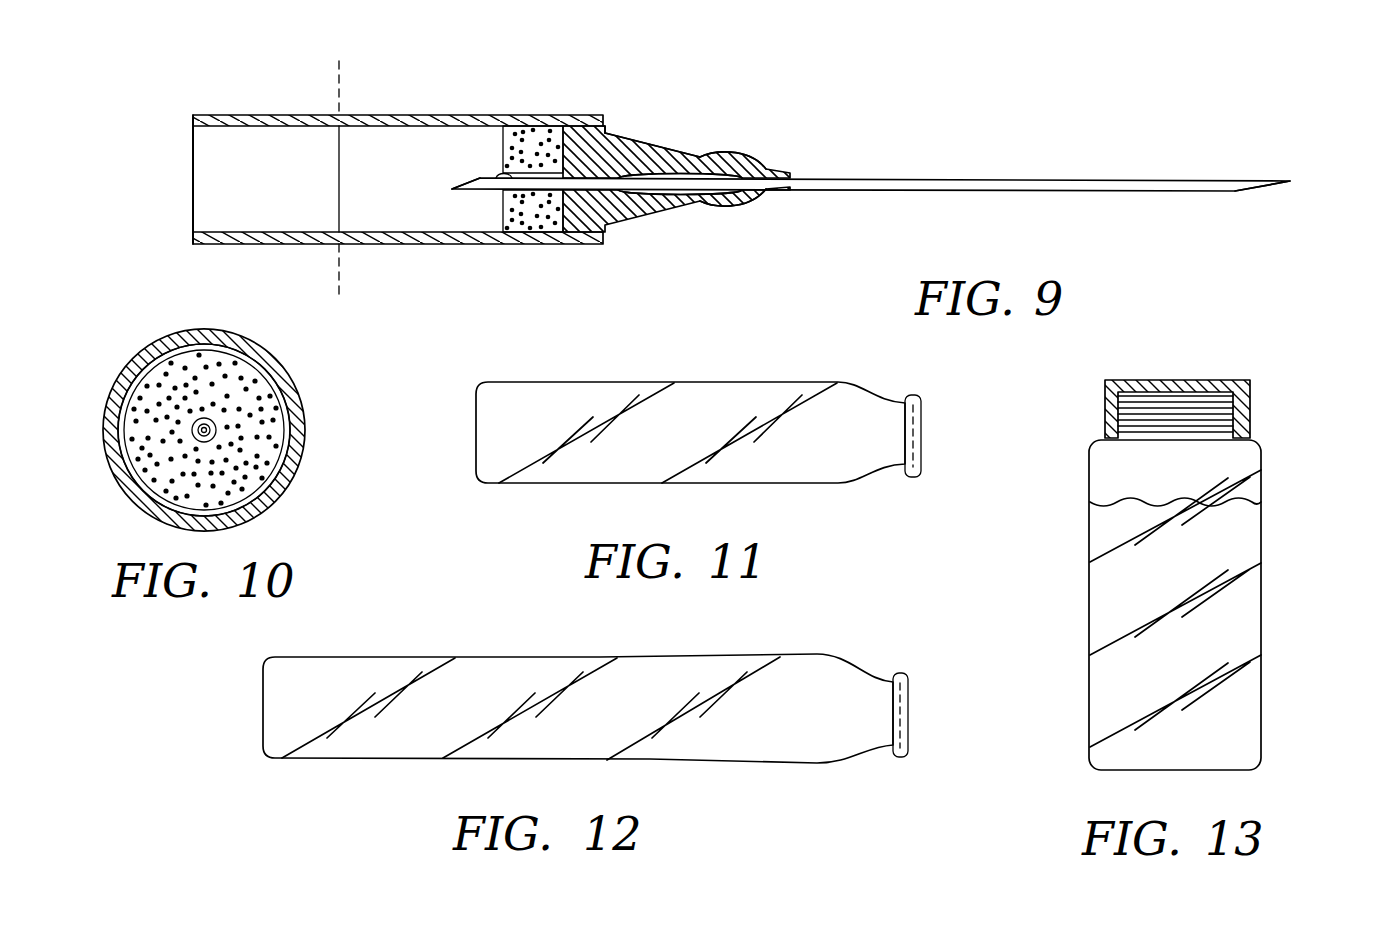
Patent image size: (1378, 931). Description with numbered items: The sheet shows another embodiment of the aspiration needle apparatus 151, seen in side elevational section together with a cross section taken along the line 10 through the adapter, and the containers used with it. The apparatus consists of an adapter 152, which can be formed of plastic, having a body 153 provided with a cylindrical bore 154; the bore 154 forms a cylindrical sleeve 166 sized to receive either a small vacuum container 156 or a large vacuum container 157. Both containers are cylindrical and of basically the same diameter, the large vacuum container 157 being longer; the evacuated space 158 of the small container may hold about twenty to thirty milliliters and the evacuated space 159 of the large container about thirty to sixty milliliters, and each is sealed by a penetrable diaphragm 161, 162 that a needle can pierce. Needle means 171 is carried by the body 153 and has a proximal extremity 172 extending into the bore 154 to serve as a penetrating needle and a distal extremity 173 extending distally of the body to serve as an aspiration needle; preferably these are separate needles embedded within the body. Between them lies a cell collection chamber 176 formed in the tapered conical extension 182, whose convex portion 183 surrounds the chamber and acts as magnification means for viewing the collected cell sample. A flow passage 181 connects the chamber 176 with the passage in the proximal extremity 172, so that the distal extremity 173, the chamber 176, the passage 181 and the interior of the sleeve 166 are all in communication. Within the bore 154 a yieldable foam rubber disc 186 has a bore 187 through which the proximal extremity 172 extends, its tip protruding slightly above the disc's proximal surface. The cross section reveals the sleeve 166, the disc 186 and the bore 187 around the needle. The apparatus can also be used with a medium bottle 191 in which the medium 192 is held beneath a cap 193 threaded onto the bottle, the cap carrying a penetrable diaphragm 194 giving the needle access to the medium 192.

In FIG. 9, the section line of FIG. 10 is at (339, 61).
In FIG. 9, the aspiration needle apparatus 151 is at (487, 75).
In FIG. 9, the adapter 152 is at (611, 96).
In FIG. 9, the body 153 is at (605, 131).
In FIG. 9, the cylindrical bore 154 is at (233, 124).
In FIG. 10, the cylindrical bore 154 is at (182, 352).
In FIG. 11, the small vacuum container 156 is at (710, 356).
In FIG. 12, the large vacuum container 157 is at (505, 645).
In FIG. 11, the evacuated space 158 is at (810, 485).
In FIG. 12, the evacuated space 159 is at (735, 758).
In FIG. 11, the penetrable diaphragm 161 is at (922, 432).
In FIG. 12, the penetrable diaphragm 162 is at (910, 712).
In FIG. 9, the cylindrical sleeve 166 is at (218, 115).
In FIG. 10, the cylindrical sleeve 166 is at (305, 426).
In FIG. 9, the needle means 171 is at (855, 178).
In FIG. 9, the proximal extremity 172 is at (477, 190).
In FIG. 9, the distal extremity 173 is at (1234, 179).
In FIG. 9, the cell collection chamber 176 is at (700, 168).
In FIG. 9, the flow passage 181 is at (662, 191).
In FIG. 9, the tapered conical extension 182 is at (654, 146).
In FIG. 9, the convex portion 183 is at (748, 210).
In FIG. 9, the foam rubber disc 186 is at (539, 215).
In FIG. 10, the foam rubber disc 186 is at (248, 386).
In FIG. 9, the bore 187 is at (503, 180).
In FIG. 10, the bore 187 is at (210, 438).
In FIG. 13, the medium bottle 191 is at (1261, 600).
In FIG. 13, the medium 192 is at (1245, 495).
In FIG. 13, the cap 193 is at (1250, 421).
In FIG. 13, the penetrable diaphragm 194 is at (1155, 380).